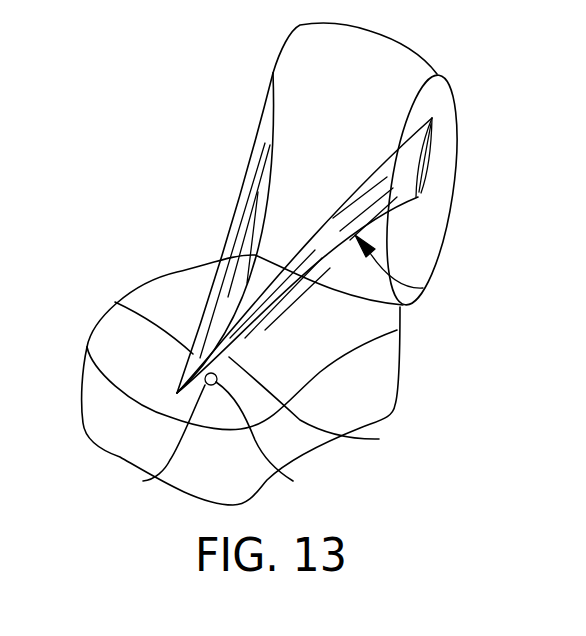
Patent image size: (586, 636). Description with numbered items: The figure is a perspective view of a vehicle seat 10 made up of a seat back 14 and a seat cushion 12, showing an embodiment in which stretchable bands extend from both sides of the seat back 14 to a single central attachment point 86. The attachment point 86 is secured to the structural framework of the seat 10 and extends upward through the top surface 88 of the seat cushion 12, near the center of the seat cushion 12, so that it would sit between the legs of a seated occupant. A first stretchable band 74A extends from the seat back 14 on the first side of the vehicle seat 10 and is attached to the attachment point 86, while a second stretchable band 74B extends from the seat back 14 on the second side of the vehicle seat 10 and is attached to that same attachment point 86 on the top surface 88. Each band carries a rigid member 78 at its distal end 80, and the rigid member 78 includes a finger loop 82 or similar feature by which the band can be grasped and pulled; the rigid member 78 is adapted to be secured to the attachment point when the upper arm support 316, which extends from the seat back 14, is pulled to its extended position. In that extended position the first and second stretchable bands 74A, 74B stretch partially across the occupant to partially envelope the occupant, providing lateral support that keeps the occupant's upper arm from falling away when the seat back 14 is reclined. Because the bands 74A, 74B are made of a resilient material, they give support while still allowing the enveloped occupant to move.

The vehicle seat 10 is at (264, 70).
The seat cushion 12 is at (308, 354).
The seat back 14 is at (346, 124).
The first stretchable band 74A is at (375, 209).
The second stretchable band 74B is at (259, 193).
The rigid member 78 is at (319, 404).
The distal end 80 is at (115, 302).
The finger loop 82 is at (143, 481).
The attachment point 86 is at (269, 438).
The top surface 88 is at (175, 293).
The upper arm support 316 is at (423, 288).